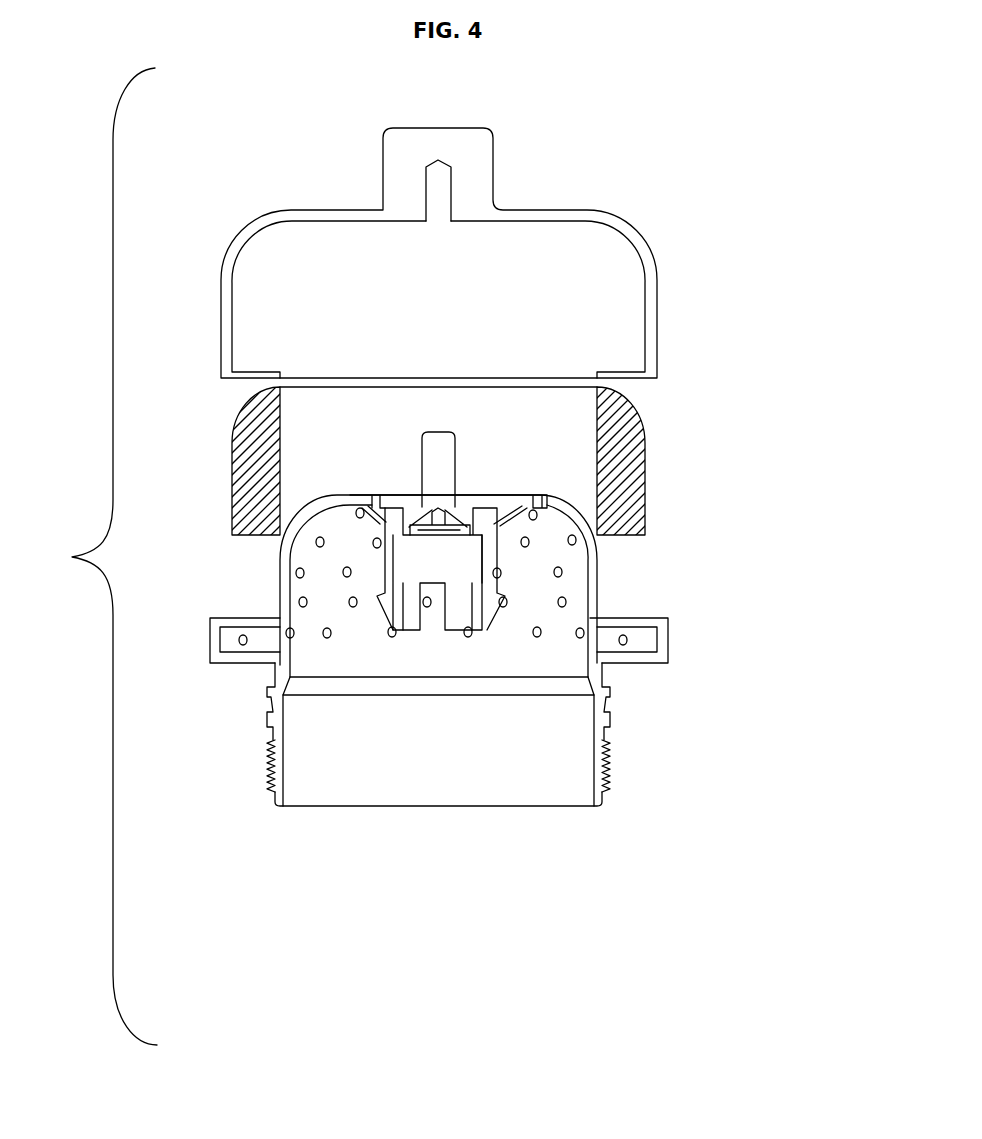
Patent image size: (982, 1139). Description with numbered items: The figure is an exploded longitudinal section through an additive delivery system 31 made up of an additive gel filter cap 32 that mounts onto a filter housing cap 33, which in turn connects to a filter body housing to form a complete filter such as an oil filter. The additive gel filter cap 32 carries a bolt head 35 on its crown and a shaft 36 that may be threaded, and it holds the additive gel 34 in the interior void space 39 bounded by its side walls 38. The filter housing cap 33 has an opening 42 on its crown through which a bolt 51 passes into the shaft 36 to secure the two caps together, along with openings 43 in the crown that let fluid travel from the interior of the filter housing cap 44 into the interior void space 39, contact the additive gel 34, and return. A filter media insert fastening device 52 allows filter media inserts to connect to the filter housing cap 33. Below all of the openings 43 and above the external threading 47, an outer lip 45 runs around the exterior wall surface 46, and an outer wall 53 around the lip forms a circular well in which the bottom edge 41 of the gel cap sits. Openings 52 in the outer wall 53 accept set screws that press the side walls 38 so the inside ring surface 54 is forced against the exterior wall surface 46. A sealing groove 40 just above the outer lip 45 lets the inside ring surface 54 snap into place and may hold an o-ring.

The additive delivery system 31 is at (97, 556).
The additive gel filter cap 32 is at (491, 216).
The filter housing cap 33 is at (492, 648).
The additive gel 34 is at (620, 442).
The bolt head 35 is at (447, 152).
The shaft 36 is at (435, 200).
The side walls 38 is at (607, 230).
The interior void space 39 is at (575, 318).
The sealing groove 40 is at (275, 647).
The bottom edge 41 is at (257, 362).
The opening 42 is at (437, 497).
The openings 43 is at (318, 548).
The interior of the filter housing cap 44 is at (433, 752).
The outer lip 45 is at (625, 668).
The exterior wall surface 46 is at (444, 586).
The external threading 47 is at (612, 763).
The bolt 51 is at (437, 460).
The openings 52 is at (428, 566).
The outer wall 53 is at (665, 620).
The inside ring surface 54 is at (345, 370).